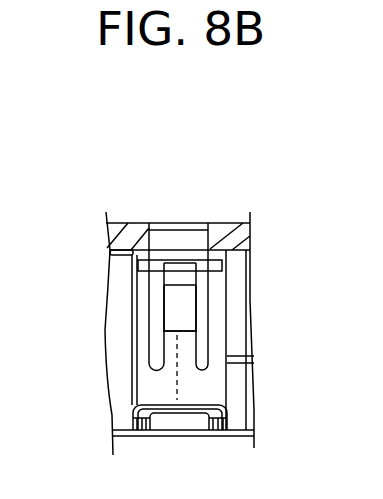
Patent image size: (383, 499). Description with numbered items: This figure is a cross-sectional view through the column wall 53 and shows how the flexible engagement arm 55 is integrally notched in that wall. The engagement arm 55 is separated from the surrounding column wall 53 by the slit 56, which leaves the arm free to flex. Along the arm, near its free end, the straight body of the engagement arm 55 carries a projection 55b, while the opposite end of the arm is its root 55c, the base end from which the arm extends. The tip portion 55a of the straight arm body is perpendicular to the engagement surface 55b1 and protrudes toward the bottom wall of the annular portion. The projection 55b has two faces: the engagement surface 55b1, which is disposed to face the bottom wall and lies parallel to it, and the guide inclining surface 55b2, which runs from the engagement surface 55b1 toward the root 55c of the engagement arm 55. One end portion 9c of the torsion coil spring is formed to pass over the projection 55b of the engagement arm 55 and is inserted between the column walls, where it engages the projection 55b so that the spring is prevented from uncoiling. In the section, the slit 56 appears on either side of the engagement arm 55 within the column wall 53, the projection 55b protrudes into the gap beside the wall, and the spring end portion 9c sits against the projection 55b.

The one end portion of the torsion coil spring 9c is at (218, 243).
The column wall 53 is at (228, 381).
The engagement arm 55 is at (205, 289).
The tip portion 55a is at (187, 270).
The projection 55b is at (222, 272).
The engagement surface 55b1 is at (177, 270).
The guide inclining surface 55b2 is at (178, 305).
The root 55c is at (178, 367).
The slit 56 is at (198, 325).